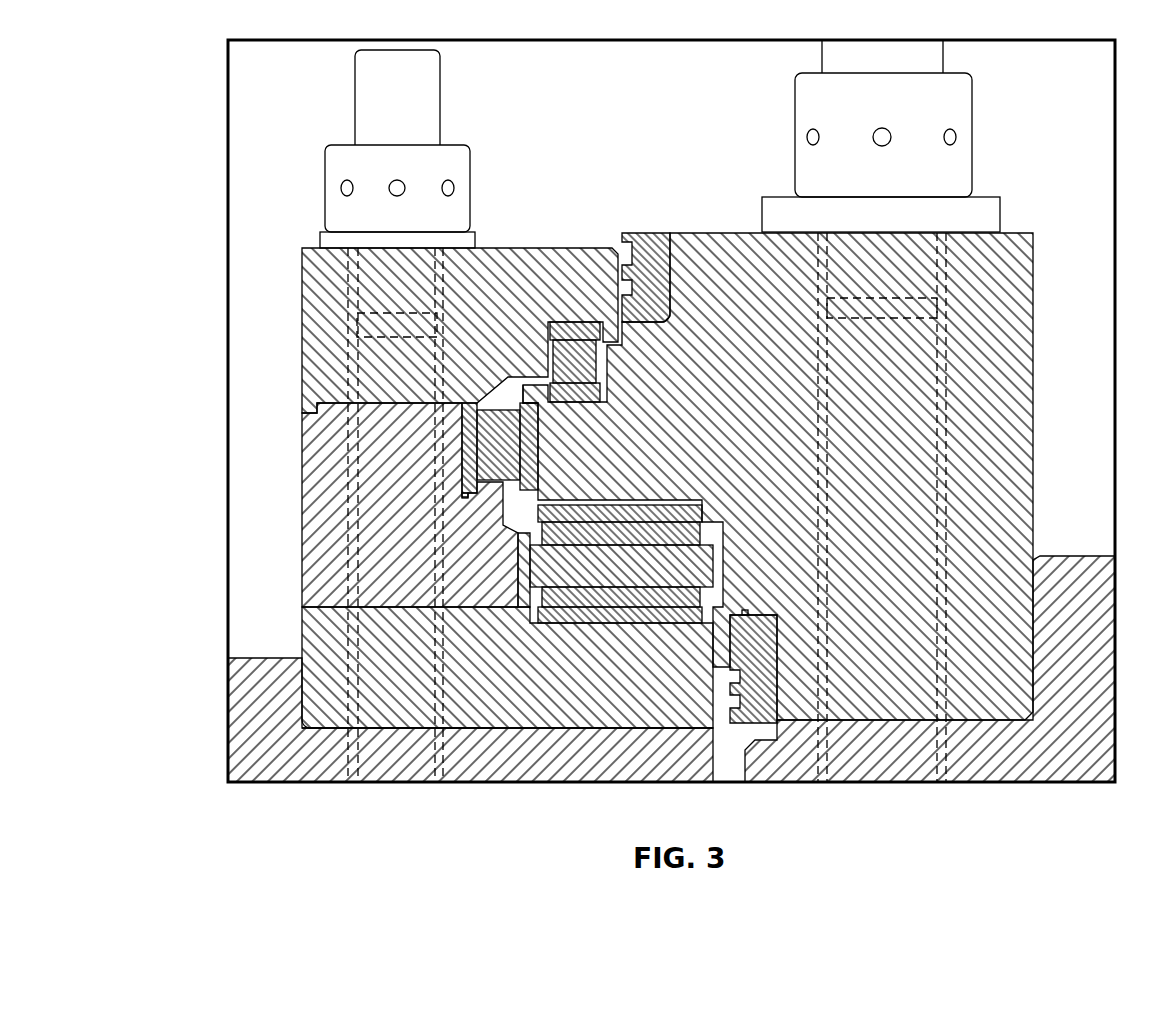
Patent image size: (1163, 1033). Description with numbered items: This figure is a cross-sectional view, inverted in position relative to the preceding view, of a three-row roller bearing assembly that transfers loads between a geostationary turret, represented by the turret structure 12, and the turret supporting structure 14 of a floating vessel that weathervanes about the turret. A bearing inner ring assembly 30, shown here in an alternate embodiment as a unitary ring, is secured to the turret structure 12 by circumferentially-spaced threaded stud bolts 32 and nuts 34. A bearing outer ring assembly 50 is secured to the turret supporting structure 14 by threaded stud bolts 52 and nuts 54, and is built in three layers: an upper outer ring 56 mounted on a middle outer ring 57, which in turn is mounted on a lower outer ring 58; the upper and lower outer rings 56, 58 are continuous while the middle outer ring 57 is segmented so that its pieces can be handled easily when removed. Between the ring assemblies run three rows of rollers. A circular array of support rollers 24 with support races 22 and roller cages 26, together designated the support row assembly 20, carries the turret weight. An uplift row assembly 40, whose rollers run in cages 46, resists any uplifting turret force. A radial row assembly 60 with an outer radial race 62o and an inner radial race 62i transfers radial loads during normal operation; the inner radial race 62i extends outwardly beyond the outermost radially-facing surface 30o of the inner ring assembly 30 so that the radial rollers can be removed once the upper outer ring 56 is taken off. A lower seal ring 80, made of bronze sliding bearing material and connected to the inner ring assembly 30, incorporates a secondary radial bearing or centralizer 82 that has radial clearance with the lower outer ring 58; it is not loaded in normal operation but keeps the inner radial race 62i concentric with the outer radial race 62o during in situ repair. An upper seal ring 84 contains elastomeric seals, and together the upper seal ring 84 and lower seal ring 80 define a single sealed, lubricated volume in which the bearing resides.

The turret structure 12 is at (1100, 698).
The turret supporting structure 14 is at (390, 768).
The support row assembly 20 is at (587, 672).
The support races 22 is at (588, 598).
The support rollers 24 is at (625, 590).
The roller cages 26 is at (570, 563).
The bearing inner ring assembly 30 is at (619, 536).
The outermost radially-facing surface of the inner ring assembly 30o is at (523, 401).
The threaded stud bolts 32 is at (943, 49).
The nuts 34 is at (972, 137).
The uplift row assembly 40 is at (548, 357).
The cages 46 is at (605, 358).
The bearing outer ring assembly 50 is at (435, 508).
The threaded stud bolts 52 is at (355, 97).
The nuts 54 is at (325, 187).
The upper outer ring 56 is at (313, 312).
The middle outer ring 57 is at (310, 512).
The lower outer ring 58 is at (312, 675).
The radial row assembly 60 is at (339, 461).
The outer radial race 62o is at (464, 424).
The inner radial race 62i is at (523, 468).
The lower seal ring 80 is at (783, 677).
The secondary radial bearing or centralizer 82 is at (755, 697).
The upper seal ring 84 is at (650, 233).